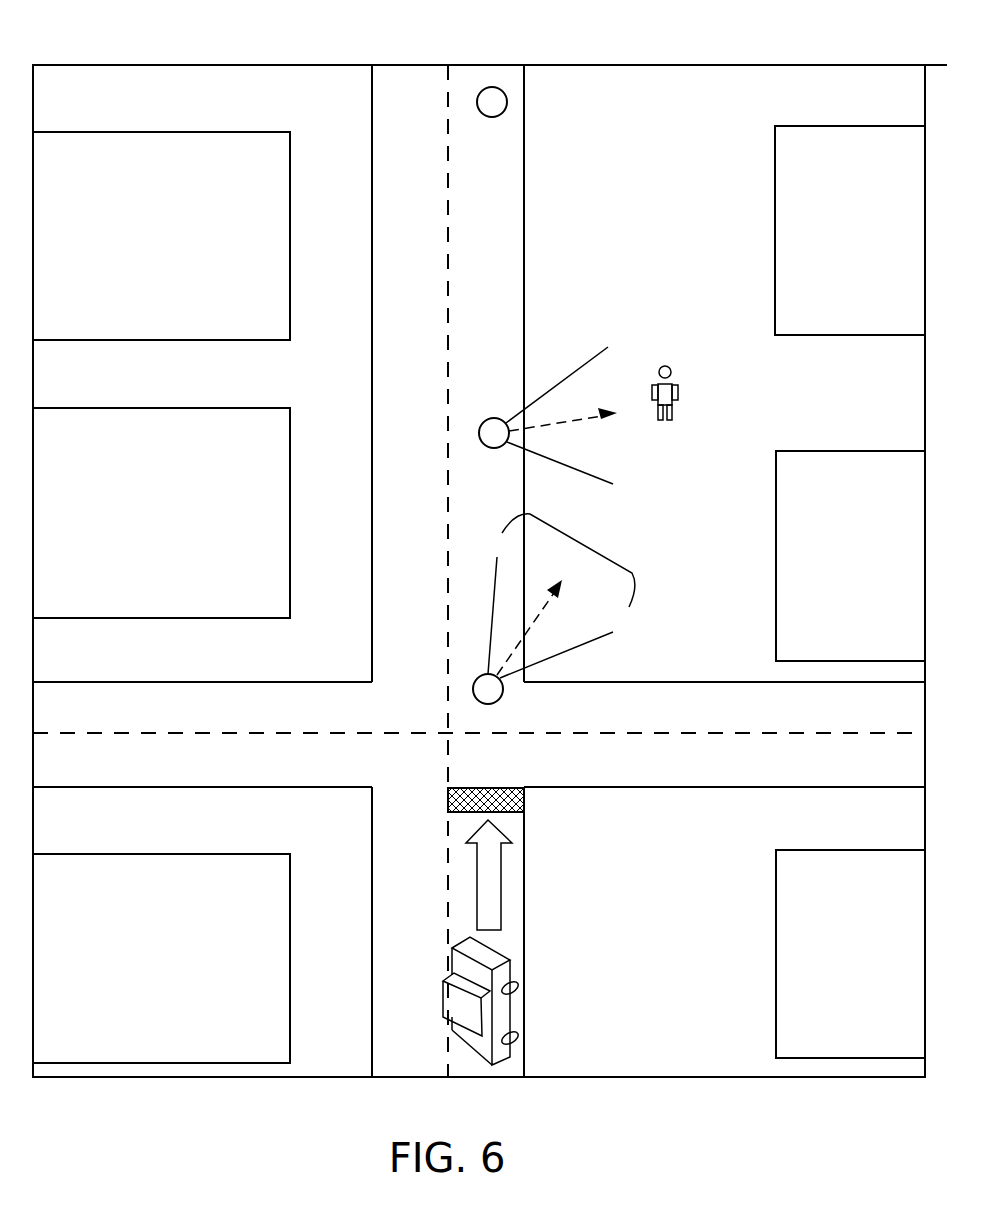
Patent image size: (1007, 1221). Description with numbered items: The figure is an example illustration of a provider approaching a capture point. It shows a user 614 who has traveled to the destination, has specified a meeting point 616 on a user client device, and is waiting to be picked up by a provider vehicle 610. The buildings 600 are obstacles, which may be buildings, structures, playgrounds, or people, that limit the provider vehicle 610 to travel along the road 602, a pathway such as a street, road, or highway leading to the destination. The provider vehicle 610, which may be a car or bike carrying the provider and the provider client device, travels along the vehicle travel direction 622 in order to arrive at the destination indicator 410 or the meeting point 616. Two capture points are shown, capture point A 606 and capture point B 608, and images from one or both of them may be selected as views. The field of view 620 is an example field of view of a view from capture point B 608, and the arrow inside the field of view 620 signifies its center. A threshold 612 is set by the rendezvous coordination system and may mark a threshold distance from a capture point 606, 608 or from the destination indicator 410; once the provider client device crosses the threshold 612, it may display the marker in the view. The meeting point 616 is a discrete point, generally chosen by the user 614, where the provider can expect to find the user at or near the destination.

The buildings 600 is at (136, 251).
The road 602 is at (56, 722).
The destination indicator 410 is at (507, 100).
The user 614 is at (668, 368).
The meeting point 616 is at (662, 430).
The capture point A 606 is at (479, 432).
The capture point B 608 is at (474, 683).
The field of view 620 is at (580, 543).
The threshold 612 is at (502, 788).
The vehicle travel direction 622 is at (503, 878).
The provider vehicle 610 is at (513, 1008).